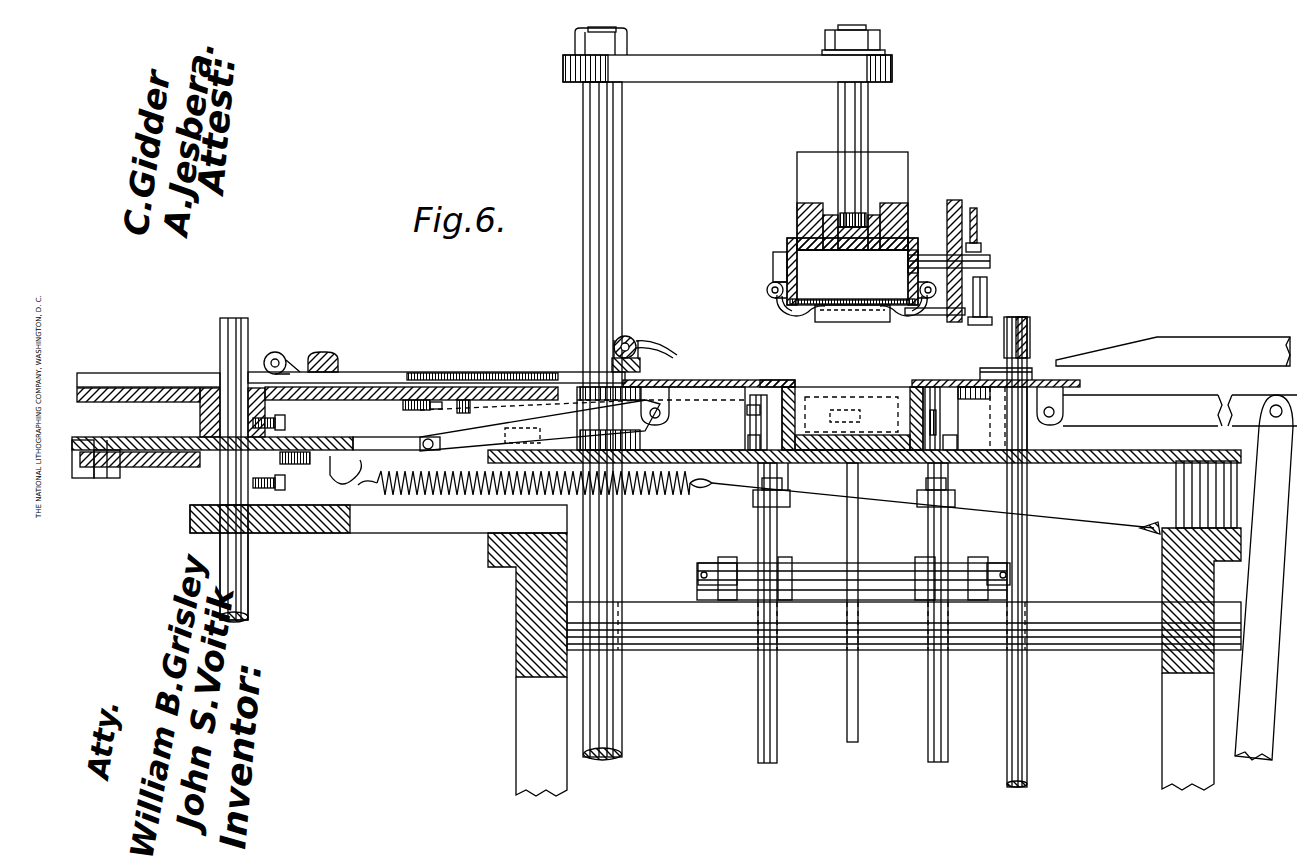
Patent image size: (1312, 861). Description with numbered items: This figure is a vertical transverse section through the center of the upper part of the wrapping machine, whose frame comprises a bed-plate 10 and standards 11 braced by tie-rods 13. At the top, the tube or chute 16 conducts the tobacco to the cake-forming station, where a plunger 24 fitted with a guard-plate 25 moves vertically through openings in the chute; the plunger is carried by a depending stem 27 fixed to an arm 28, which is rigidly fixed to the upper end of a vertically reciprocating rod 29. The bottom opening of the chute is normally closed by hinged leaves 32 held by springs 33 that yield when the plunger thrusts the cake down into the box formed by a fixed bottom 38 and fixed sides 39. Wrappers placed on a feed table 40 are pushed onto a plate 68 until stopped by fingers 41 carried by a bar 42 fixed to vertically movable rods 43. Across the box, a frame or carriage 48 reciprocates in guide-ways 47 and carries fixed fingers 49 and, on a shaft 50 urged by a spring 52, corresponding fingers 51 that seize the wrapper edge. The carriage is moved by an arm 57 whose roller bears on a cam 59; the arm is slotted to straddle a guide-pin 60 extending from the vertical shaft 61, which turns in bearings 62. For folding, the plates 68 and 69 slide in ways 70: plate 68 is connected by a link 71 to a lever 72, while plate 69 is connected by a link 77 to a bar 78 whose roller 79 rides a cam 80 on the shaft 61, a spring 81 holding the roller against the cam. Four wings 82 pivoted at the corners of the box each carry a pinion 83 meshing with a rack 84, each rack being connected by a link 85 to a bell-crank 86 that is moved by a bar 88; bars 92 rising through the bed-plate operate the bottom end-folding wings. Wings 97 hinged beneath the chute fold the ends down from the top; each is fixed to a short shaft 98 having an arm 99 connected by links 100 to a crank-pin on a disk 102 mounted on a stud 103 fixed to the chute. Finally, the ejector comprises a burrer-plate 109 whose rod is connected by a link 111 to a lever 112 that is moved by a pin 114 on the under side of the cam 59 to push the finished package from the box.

The bed-plate 10 is at (1098, 463).
The standards 11 is at (864, 628).
The tie-rods 13 is at (904, 625).
The tube or chute 16 is at (787, 250).
The plunger 24 is at (825, 252).
The guard-plate 25 is at (852, 201).
The depending stem 27 is at (860, 120).
The arm 28 is at (727, 54).
The rod 29 is at (607, 172).
The leaves 32 is at (830, 300).
The springs 33 is at (805, 314).
The fixed bottom 38 is at (888, 450).
The fixed sides 39 is at (812, 375).
The feed table 40 is at (1173, 351).
The fingers 41 is at (985, 368).
The bar 42 is at (1015, 333).
The rods 43 is at (1012, 320).
The guide-ways 47 is at (378, 375).
The frame or carriage 48 is at (452, 375).
The fixed fingers 49 is at (668, 395).
The shaft 50 is at (635, 338).
The fingers 51 is at (668, 341).
The spring 52 is at (612, 352).
The arm 57 is at (160, 362).
The cam 59 is at (340, 400).
The guide-pin 60 is at (244, 335).
The vertical shaft 61 is at (240, 580).
The bearings 62 is at (370, 540).
The plate 68 is at (1008, 380).
The plate 69 is at (722, 380).
The ways 70 is at (668, 426).
The link 71 is at (1180, 410).
The lever 72 is at (1264, 577).
The link 77 is at (480, 423).
The bar 78 is at (322, 426).
The roller 79 is at (130, 470).
The cam 80 is at (304, 466).
The spring 81 is at (665, 497).
The wings 82 is at (770, 425).
The pinion 83 is at (790, 464).
The rack 84 is at (748, 442).
The link 85 is at (765, 507).
The bell-crank 86 is at (795, 540).
The bar 88 is at (758, 713).
The bar 92 is at (847, 702).
The wings 97 is at (850, 318).
The short shaft 98 is at (935, 312).
The arm 99 is at (980, 295).
The links 100 is at (977, 215).
The disk 102 is at (958, 202).
The stud 103 is at (930, 254).
The burrer-plate 109 is at (850, 400).
The link 111 is at (747, 412).
The lever 112 is at (412, 408).
The pin 114 is at (455, 410).